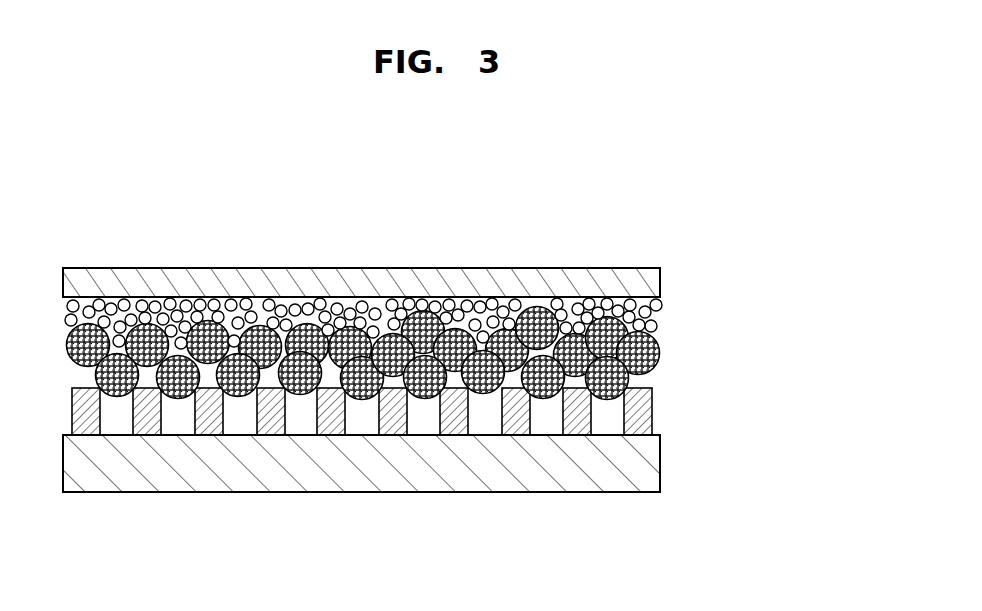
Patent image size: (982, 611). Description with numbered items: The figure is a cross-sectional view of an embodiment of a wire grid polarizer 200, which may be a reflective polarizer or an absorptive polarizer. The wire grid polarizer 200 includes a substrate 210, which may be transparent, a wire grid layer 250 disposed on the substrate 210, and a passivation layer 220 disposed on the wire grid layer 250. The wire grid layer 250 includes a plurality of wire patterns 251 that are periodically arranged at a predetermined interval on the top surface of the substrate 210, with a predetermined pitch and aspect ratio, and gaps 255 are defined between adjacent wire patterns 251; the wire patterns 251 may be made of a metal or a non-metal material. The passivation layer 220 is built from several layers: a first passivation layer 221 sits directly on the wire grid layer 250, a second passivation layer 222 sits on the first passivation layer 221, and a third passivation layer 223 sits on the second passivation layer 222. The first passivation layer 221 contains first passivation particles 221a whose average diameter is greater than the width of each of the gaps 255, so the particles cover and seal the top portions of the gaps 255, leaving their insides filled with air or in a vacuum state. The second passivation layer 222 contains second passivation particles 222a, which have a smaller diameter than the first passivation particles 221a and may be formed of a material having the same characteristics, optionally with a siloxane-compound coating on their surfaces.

The wire grid polarizer 200 is at (443, 366).
The substrate 210 is at (643, 465).
The wire grid layer 250 is at (420, 471).
The wire patterns 251 is at (515, 437).
The gaps 255 is at (610, 427).
The passivation layer 220 is at (443, 305).
The first passivation layer 221 is at (418, 305).
The first passivation particles 221a is at (423, 323).
The second passivation layer 222 is at (416, 280).
The second passivation particles 222a is at (338, 308).
The third passivation layer 223 is at (652, 288).